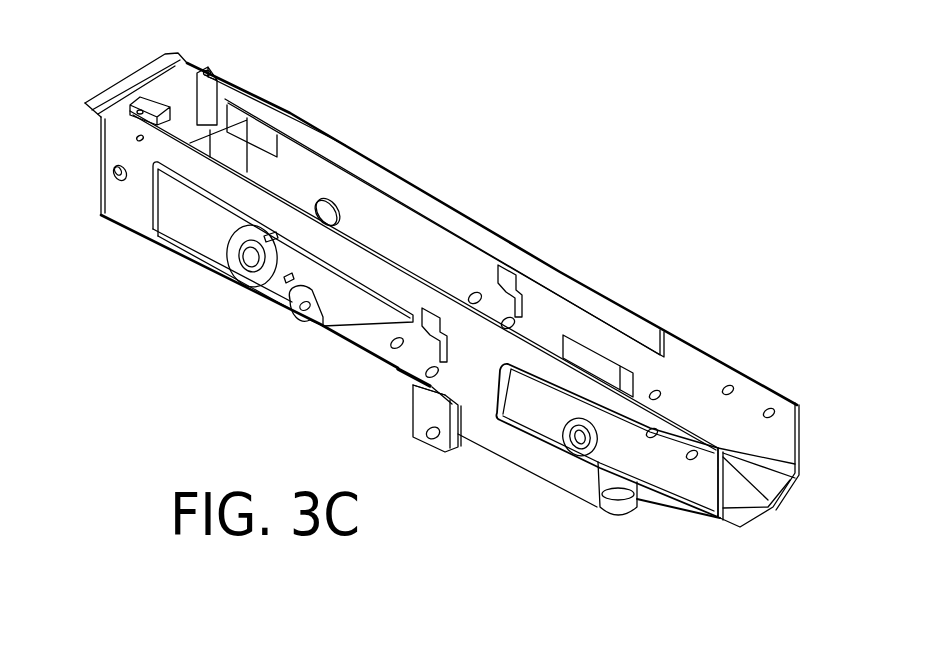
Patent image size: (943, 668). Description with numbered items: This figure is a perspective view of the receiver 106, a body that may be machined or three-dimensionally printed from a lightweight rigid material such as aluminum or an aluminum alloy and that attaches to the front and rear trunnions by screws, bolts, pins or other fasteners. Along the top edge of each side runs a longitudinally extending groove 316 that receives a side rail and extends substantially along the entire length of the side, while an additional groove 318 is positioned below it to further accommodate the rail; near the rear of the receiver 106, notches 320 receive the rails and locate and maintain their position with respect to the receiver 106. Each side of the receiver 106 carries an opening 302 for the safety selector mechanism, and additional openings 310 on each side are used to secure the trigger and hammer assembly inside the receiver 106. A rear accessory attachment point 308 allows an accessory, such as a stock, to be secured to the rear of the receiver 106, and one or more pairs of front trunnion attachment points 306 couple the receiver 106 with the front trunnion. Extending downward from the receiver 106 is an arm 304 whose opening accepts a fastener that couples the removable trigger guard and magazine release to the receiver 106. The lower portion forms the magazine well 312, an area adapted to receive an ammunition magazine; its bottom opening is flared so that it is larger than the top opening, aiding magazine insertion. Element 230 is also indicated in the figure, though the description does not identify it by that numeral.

The receiver 106 is at (715, 190).
The retention clip 230 is at (430, 315).
The opening 302 is at (338, 210).
The arm 304 is at (418, 405).
The front trunnion attachment points 306 is at (660, 390).
The rear accessory attachment point 308 is at (118, 182).
The additional openings 310 is at (473, 292).
The magazine well 312 is at (529, 507).
The longitudinally extending grooves 316 is at (280, 194).
The additional grooves 318 is at (250, 128).
The notches 320 is at (110, 92).